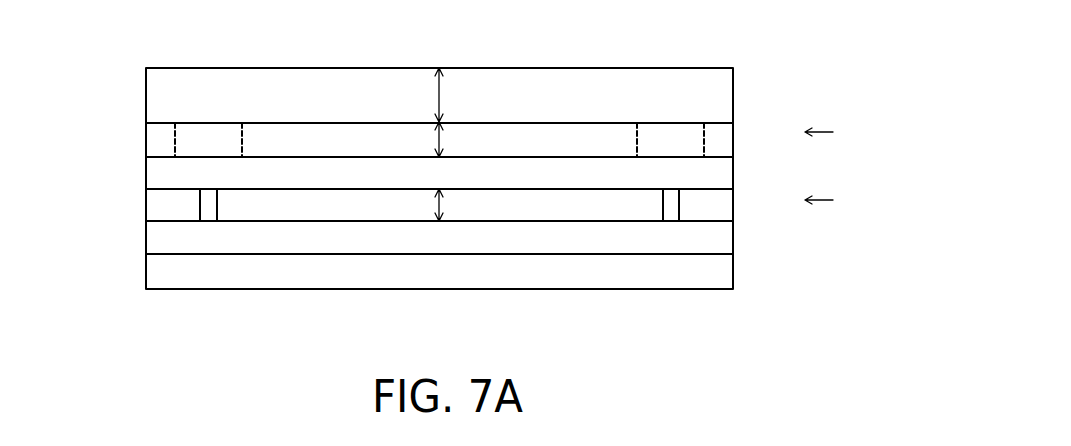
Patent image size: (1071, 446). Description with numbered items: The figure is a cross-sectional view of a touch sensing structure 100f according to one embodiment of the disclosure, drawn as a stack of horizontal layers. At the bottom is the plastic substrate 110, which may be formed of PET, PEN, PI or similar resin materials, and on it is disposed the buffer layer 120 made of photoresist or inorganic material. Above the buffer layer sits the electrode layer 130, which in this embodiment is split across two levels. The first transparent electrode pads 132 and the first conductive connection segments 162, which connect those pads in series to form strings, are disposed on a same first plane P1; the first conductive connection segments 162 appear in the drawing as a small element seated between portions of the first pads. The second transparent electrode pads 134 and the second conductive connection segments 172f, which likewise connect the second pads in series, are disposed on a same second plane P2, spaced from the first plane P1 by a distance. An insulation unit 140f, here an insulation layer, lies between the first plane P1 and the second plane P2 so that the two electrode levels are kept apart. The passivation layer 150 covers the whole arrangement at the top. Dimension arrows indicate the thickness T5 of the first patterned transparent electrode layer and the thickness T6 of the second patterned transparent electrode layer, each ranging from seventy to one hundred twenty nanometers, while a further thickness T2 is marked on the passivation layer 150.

The touch sensing structure 100f is at (788, 359).
The plastic substrate 110 is at (708, 272).
The buffer layer 120 is at (708, 239).
The electrode layer 130 is at (380, 189).
The first transparent electrode pads 132 is at (248, 208).
The second transparent electrode pads 134 is at (267, 142).
The insulation unit 140f is at (708, 168).
The passivation layer 150 is at (718, 84).
The first conductive connection segments 162 is at (672, 201).
The second conductive connection segments 172f is at (672, 134).
The thickness T2 is at (440, 95).
The thickness of the first patterned transparent electrode layer T5 is at (445, 206).
The thickness of the second patterned transparent electrode layer T6 is at (440, 138).
The first plane P1 is at (832, 198).
The second plane P2 is at (835, 130).